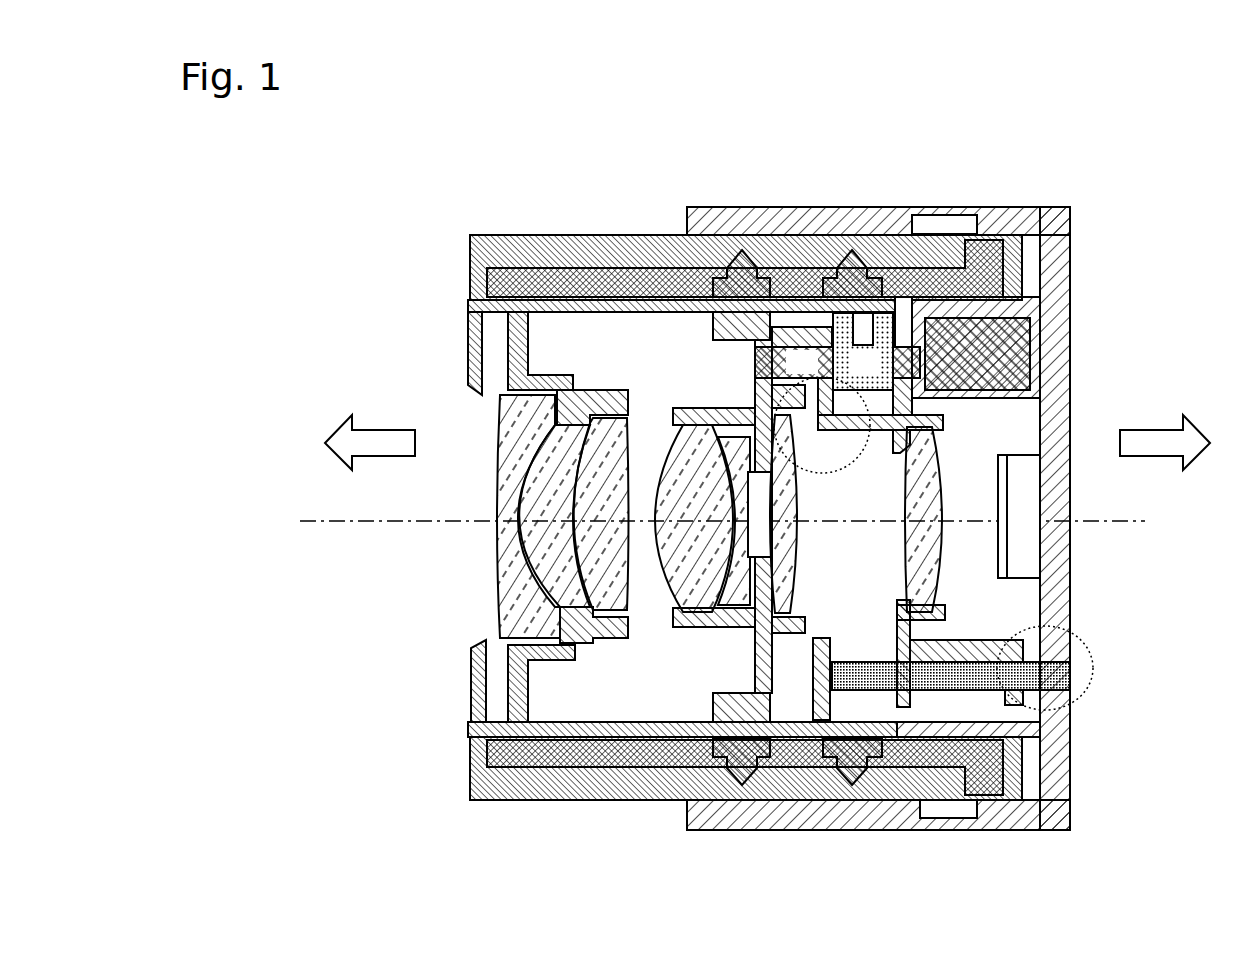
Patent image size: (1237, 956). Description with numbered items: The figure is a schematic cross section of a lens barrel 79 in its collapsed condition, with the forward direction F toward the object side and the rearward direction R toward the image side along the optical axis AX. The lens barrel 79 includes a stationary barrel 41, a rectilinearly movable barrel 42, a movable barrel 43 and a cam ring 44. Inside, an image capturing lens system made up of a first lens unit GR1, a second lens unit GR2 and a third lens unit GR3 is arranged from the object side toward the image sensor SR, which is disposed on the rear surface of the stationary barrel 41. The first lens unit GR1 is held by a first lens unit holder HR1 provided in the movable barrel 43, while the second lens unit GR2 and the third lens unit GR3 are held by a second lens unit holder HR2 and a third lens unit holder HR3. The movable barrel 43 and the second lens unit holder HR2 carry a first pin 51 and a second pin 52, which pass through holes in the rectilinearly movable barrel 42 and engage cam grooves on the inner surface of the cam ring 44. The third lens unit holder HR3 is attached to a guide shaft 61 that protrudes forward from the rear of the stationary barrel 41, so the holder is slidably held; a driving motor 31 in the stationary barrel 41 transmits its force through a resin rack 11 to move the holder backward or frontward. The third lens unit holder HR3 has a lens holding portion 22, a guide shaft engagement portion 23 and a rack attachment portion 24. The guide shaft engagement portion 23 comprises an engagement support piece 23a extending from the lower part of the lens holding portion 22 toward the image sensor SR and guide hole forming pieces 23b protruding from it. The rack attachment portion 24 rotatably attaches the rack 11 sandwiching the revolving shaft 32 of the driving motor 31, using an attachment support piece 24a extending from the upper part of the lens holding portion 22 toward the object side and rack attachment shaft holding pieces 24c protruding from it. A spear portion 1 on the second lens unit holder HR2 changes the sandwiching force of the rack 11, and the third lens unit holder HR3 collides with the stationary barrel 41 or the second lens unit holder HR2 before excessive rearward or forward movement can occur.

The lens barrel 79 is at (1087, 170).
The stationary barrel 41 is at (684, 212).
The rectilinearly movable barrel 42 is at (594, 266).
The movable barrel 43 is at (468, 302).
The cam ring 44 is at (538, 236).
The first pin 51 is at (852, 250).
The second pin 52 is at (742, 250).
The spear portion 1 is at (756, 360).
The rack 11 is at (876, 351).
The revolving shaft 32 is at (794, 362).
The driving motor 31 is at (1032, 362).
The first lens unit holder HR1 is at (605, 392).
The second lens unit holder HR2 is at (683, 392).
The third lens unit holder HR3 is at (945, 422).
The first lens unit GR1 is at (495, 597).
The second lens unit GR2 is at (800, 588).
The third lens unit GR3 is at (942, 590).
The rack attachment portion 24 is at (905, 480).
The attachment support piece 24a is at (862, 440).
The rack attachment shaft holding pieces 24c is at (828, 440).
The lens holding portion 22 is at (935, 435).
The guide shaft engagement portion 23 is at (890, 650).
The engagement support piece 23a is at (927, 637).
The guide hole forming pieces 23b is at (1008, 705).
The guide shaft 61 is at (874, 690).
The image sensor SR is at (1022, 572).
The optical axis AX is at (745, 521).
The forward direction F is at (370, 442).
The rearward direction R is at (1165, 442).